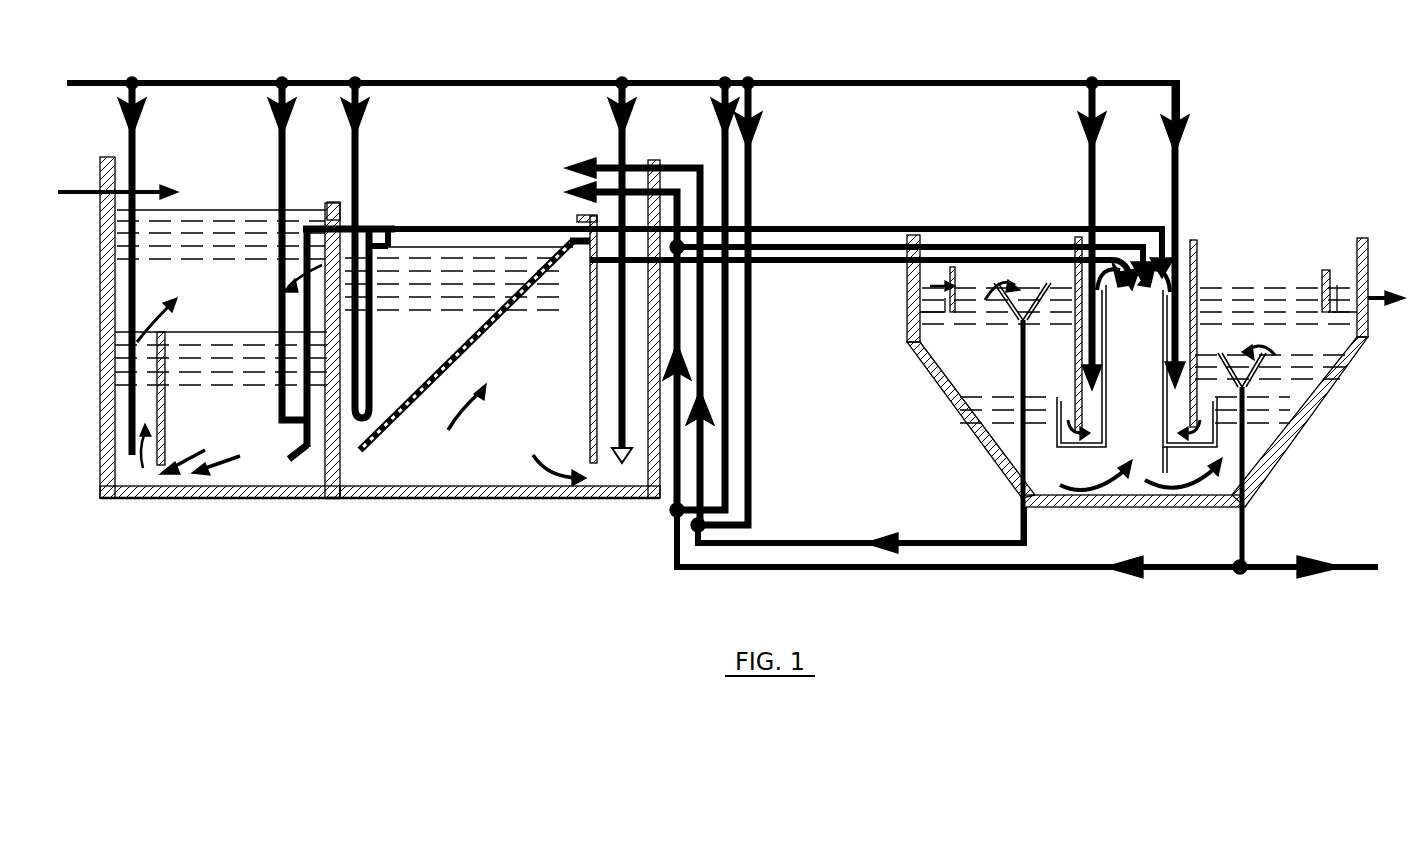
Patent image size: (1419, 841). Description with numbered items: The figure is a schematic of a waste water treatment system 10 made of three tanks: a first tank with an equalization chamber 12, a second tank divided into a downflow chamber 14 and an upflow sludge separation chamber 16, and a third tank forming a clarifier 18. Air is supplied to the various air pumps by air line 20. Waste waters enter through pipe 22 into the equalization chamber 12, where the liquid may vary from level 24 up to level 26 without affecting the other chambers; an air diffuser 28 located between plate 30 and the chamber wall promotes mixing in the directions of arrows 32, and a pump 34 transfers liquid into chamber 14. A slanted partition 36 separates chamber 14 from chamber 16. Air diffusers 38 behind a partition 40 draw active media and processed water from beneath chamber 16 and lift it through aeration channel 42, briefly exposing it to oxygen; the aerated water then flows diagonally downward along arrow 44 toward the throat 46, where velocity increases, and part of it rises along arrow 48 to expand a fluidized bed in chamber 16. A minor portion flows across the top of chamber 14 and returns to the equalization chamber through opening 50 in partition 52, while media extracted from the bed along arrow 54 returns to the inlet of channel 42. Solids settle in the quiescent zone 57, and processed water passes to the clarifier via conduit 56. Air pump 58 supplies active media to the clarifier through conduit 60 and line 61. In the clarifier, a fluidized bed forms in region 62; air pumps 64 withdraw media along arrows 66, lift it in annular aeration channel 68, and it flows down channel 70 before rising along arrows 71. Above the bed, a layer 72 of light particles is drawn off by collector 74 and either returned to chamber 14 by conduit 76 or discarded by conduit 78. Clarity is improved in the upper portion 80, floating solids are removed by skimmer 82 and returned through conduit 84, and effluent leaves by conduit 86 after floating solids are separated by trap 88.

The treatment system 10 is at (447, 600).
The equalization chamber 12 is at (218, 508).
The downflow chamber 14 is at (432, 172).
The sludge separation chamber 16 is at (514, 512).
The clarifier 18 is at (1258, 172).
The air line 20 is at (203, 80).
The inlet pipe 22 is at (85, 192).
The lower liquid level 24 is at (118, 322).
The upper liquid level 26 is at (206, 212).
The air diffuser 28 is at (127, 428).
The plate 30 is at (167, 404).
The mixing arrows 32 is at (200, 451).
The air lift pump 34 is at (288, 452).
The slanted partition 36 is at (470, 350).
The air diffusers 38 is at (618, 460).
The partition 40 is at (592, 358).
The aeration channel 42 is at (590, 322).
The downflow arrow 44 is at (485, 240).
The throat 46 is at (346, 492).
The upflow arrow 48 is at (467, 416).
The return opening 50 is at (325, 280).
The partition 52 is at (334, 204).
The extraction arrow 54 is at (559, 461).
The conduit 56 is at (858, 263).
The quiescent zone 57 is at (562, 301).
The air pump 58 is at (372, 399).
The conduit 60 is at (448, 245).
The recirculation line 61 is at (802, 243).
The fluidized bed region 62 is at (1272, 400).
The air pumps 64 is at (1182, 360).
The withdrawal arrows 66 is at (1070, 388).
The annular aeration channel 68 is at (1185, 295).
The downflow channel 70 is at (1133, 236).
The upflow arrows 71 is at (1138, 478).
The light particle layer 72 is at (1304, 378).
The collector 74 is at (1283, 375).
The return conduit 76 is at (993, 572).
The discard conduit 78 is at (1355, 575).
The upper clarifier portion 80 is at (980, 312).
The skimmer 82 is at (1020, 310).
The skimmer return conduit 84 is at (820, 540).
The effluent conduit 86 is at (1372, 295).
The trap 88 is at (1318, 272).